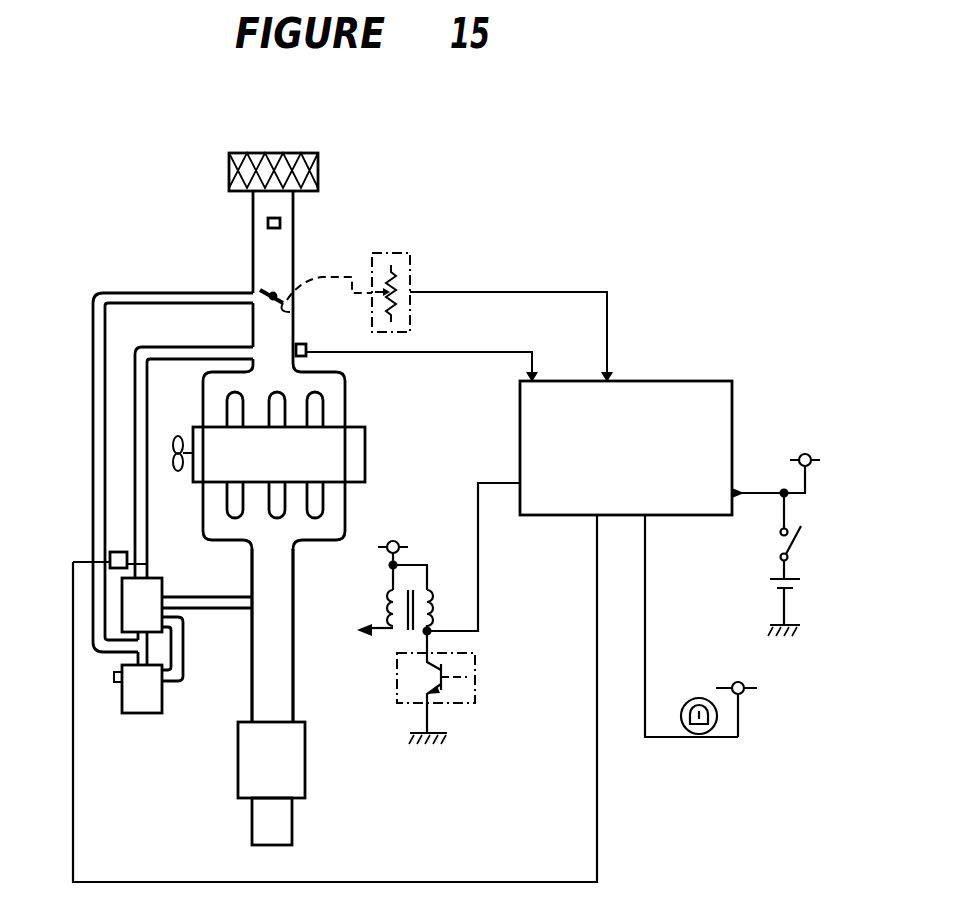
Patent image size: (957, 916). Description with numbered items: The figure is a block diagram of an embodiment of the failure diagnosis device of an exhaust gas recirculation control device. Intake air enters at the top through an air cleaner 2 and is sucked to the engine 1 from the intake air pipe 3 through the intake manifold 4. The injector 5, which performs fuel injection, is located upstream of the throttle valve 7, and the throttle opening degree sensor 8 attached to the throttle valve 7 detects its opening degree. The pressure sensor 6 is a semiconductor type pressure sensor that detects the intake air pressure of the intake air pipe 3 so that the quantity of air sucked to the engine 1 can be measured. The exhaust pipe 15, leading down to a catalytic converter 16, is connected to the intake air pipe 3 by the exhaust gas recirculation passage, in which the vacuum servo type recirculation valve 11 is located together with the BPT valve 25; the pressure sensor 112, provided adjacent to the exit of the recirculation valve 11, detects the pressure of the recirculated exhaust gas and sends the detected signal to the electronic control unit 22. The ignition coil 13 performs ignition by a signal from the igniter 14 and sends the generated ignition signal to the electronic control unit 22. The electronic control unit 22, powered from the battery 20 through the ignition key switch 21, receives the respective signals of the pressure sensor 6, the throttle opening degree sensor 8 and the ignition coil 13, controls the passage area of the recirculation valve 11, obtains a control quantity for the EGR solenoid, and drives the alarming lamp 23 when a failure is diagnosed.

The engine 1 is at (365, 447).
The air cleaner 2 is at (229, 178).
The intake air pipe 3 is at (252, 233).
The intake manifold 4 is at (345, 392).
The injector 5 is at (280, 222).
The pressure sensor 6 is at (306, 346).
The throttle valve 7 is at (297, 313).
The throttle opening degree sensor 8 is at (410, 258).
The recirculation valve 11 is at (163, 578).
The pressure sensor 112 is at (116, 552).
The ignition coil 13 is at (385, 600).
The igniter 14 is at (475, 686).
The exhaust pipe 15 is at (293, 693).
The catalytic converter 16 is at (305, 772).
The battery 20 is at (771, 592).
The ignition key switch 21 is at (779, 546).
The electronic control unit 22 is at (664, 381).
The alarming lamp 23 is at (698, 736).
The BPT valve 25 is at (190, 695).